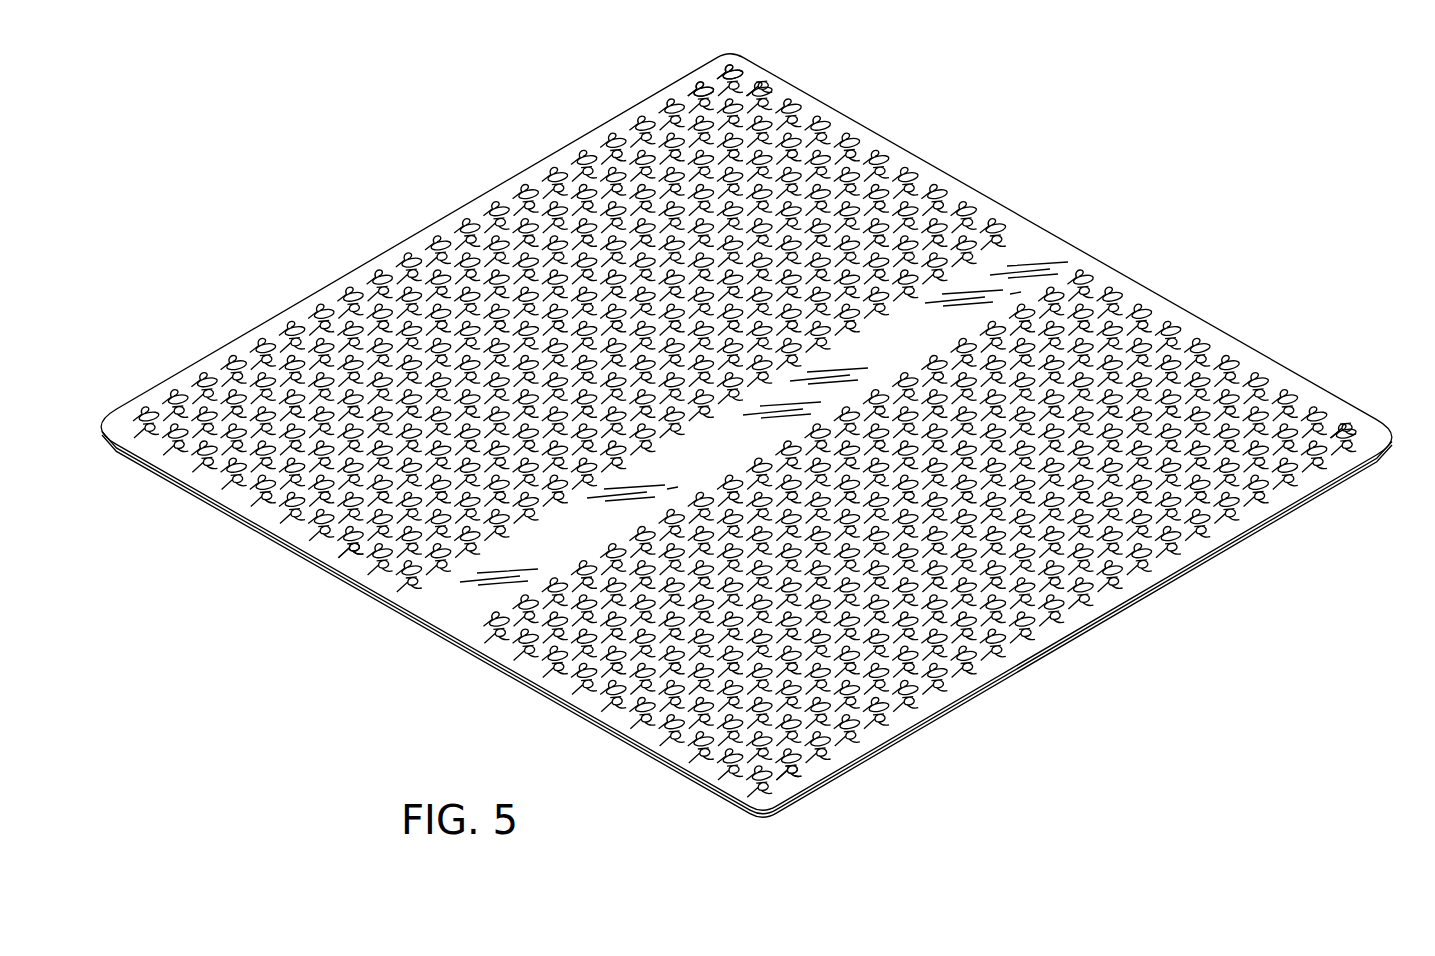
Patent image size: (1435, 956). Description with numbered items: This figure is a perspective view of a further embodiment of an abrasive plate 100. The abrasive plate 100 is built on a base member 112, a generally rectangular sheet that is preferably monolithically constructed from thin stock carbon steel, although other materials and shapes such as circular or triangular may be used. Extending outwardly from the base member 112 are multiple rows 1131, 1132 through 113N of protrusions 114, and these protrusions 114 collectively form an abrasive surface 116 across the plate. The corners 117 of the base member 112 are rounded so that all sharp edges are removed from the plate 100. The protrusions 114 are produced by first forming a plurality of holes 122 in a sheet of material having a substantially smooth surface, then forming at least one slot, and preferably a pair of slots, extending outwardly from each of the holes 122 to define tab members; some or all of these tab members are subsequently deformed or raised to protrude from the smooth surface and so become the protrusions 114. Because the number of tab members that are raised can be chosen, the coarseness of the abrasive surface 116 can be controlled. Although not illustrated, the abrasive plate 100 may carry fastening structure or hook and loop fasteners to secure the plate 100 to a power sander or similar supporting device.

The abrasive plate 100 is at (768, 419).
The base member 112 is at (1038, 658).
The first row of protrusions 1131 is at (740, 72).
The second row of protrusions 1132 is at (752, 82).
The Nth row of protrusions 113N is at (1356, 436).
The protrusion 114 is at (704, 84).
The abrasive surface 116 is at (892, 185).
The corner 117 is at (1397, 444).
The hole 122 is at (800, 770).